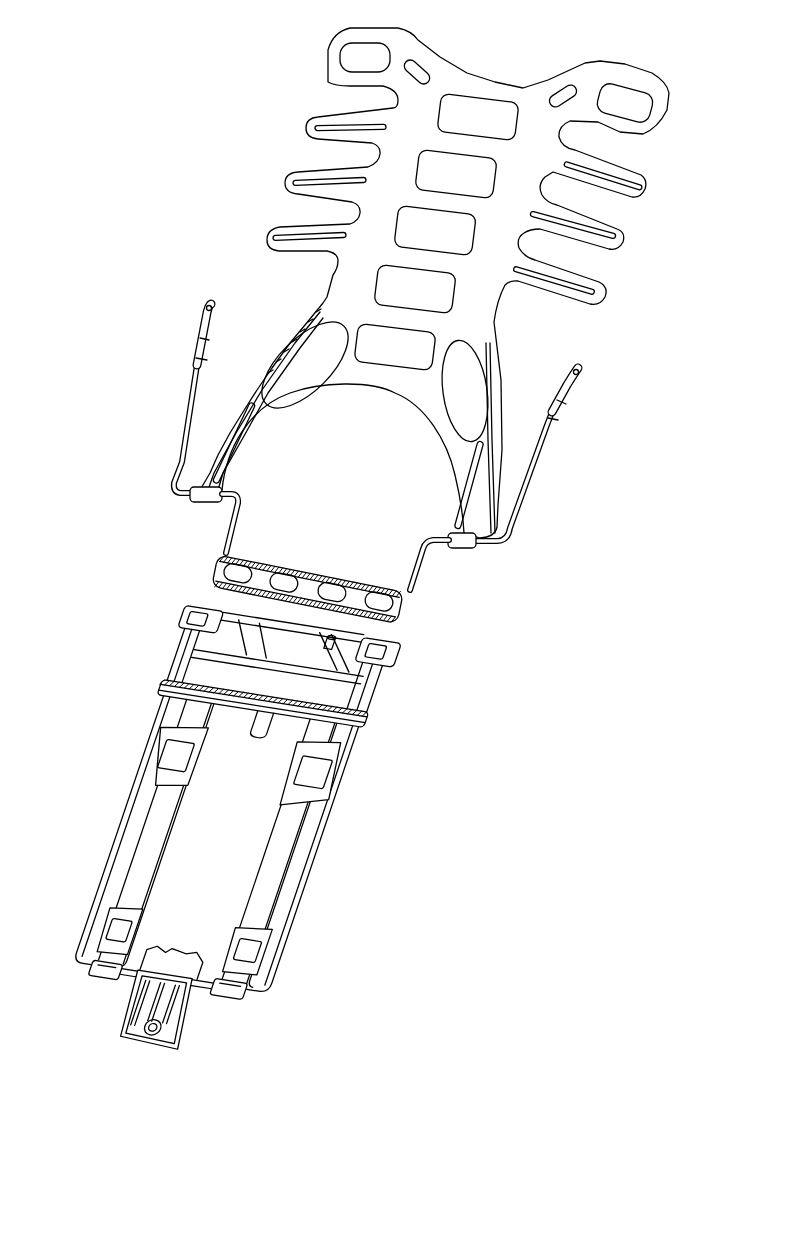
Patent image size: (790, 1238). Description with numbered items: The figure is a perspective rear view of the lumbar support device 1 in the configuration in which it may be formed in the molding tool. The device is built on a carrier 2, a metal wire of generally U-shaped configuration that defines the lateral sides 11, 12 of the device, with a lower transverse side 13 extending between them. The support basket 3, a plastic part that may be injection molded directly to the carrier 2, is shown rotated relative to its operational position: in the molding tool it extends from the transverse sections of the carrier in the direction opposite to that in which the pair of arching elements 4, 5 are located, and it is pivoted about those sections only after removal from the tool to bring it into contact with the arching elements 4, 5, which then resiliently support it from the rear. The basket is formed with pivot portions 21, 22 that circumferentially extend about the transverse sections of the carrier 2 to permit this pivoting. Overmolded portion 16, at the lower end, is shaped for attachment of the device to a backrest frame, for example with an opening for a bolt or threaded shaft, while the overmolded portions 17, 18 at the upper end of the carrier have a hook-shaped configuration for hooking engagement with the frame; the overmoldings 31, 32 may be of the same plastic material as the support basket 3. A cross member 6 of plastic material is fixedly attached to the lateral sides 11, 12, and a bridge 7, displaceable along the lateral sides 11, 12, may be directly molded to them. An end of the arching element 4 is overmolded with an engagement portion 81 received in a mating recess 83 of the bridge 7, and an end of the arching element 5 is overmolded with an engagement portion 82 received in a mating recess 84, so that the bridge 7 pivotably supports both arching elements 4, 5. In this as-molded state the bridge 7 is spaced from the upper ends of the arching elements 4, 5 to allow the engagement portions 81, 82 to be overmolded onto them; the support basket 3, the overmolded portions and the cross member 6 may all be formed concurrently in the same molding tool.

The lumbar support device 1 is at (108, 120).
The carrier 2 is at (527, 483).
The support basket 3 is at (328, 62).
The arching element 4 is at (277, 867).
The arching element 5 is at (137, 855).
The cross member 6 is at (305, 566).
The bridge 7 is at (198, 667).
The lateral side 11 is at (290, 913).
The lateral side 12 is at (97, 900).
The lower transverse side 13 is at (253, 1000).
The overmolded portion 16 is at (183, 1047).
The overmolded portion 17 is at (582, 388).
The overmolded portion 18 is at (193, 341).
The pivot portion 21 is at (462, 548).
The pivot portion 22 is at (200, 504).
The overmolding 31 is at (228, 993).
The overmolding 32 is at (102, 977).
The engagement portion 81 is at (333, 753).
The engagement portion 82 is at (175, 725).
The mating recess 83 is at (353, 648).
The mating recess 84 is at (190, 600).